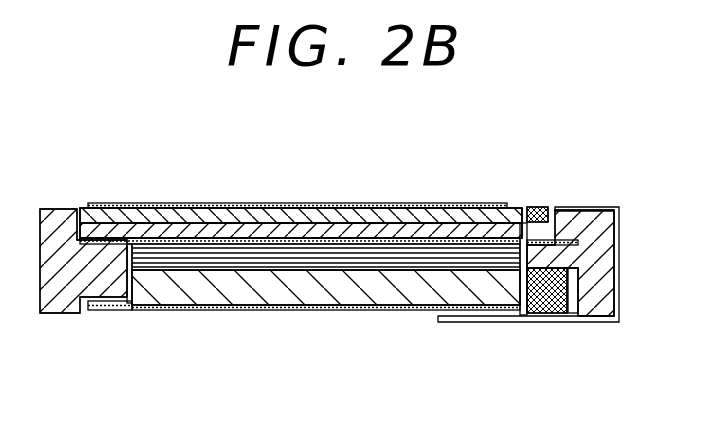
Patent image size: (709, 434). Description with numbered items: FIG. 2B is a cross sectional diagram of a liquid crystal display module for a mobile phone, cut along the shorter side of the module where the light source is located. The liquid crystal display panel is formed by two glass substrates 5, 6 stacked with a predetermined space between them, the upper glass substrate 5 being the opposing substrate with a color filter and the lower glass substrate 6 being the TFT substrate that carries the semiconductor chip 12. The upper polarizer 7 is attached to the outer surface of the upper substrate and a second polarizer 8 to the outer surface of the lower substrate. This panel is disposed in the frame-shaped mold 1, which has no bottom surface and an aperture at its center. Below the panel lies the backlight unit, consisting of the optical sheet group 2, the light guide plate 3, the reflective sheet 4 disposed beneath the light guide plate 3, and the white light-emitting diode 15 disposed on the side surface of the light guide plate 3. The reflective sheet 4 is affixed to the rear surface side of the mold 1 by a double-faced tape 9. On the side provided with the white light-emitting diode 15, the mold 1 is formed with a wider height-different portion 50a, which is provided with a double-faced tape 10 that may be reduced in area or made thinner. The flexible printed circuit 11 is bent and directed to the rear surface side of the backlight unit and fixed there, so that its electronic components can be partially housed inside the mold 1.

The mold 1 is at (602, 212).
The optical sheet group 2 is at (506, 204).
The light guide plate 3 is at (310, 296).
The reflective sheet 4 is at (220, 310).
The glass substrate 5 is at (214, 210).
The glass substrate 6 is at (248, 228).
The upper polarizer 7 is at (160, 203).
The polarizer 8 is at (297, 244).
The double-faced tape 9 is at (104, 310).
The double-faced tape 10 is at (106, 240).
The flexible printed circuit 11 is at (619, 226).
The semiconductor chip 12 is at (545, 208).
The white light-emitting diode 15 is at (536, 318).
The height-different portion 50a is at (580, 270).